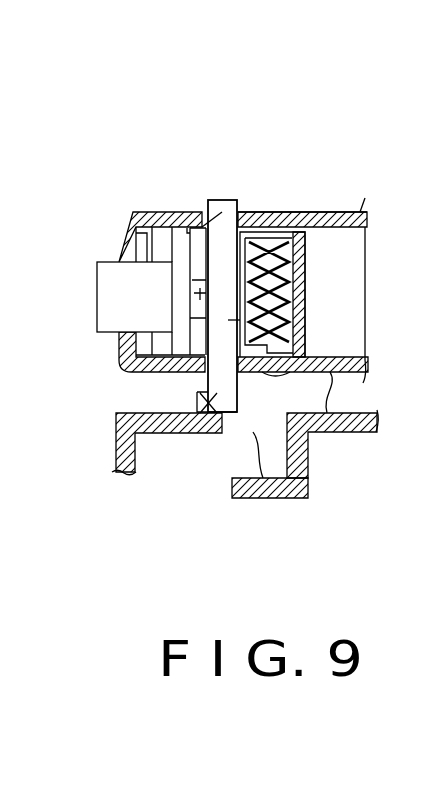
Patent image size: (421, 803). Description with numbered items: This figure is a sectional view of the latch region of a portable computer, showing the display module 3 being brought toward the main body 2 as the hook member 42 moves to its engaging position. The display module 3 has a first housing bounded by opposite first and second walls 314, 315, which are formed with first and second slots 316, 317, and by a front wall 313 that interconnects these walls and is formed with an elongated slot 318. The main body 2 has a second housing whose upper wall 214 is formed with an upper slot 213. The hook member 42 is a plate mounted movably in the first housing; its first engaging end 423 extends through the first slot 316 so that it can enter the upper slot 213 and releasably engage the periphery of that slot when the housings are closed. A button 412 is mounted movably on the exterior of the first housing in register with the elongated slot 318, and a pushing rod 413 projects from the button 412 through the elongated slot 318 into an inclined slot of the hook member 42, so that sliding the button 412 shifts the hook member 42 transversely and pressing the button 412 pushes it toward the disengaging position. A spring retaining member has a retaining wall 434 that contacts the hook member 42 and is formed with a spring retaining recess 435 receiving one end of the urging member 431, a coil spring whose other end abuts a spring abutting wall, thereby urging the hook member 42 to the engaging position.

The main body 2 is at (153, 487).
The display module 3 is at (114, 348).
The hook member 42 is at (222, 191).
The upper slot 213 is at (267, 498).
The upper wall 214 is at (195, 412).
The front wall 313 is at (121, 258).
The first wall 314 is at (330, 432).
The second wall 315 is at (335, 212).
The first slot 316 is at (318, 356).
The second slot 317 is at (205, 225).
The elongated slot 318 is at (103, 260).
The button 412 is at (152, 295).
The pushing rod 413 is at (232, 320).
The first engaging end 423 is at (196, 433).
The urging member 431 is at (275, 235).
The retaining wall 434 is at (255, 240).
The spring retaining recess 435 is at (262, 238).